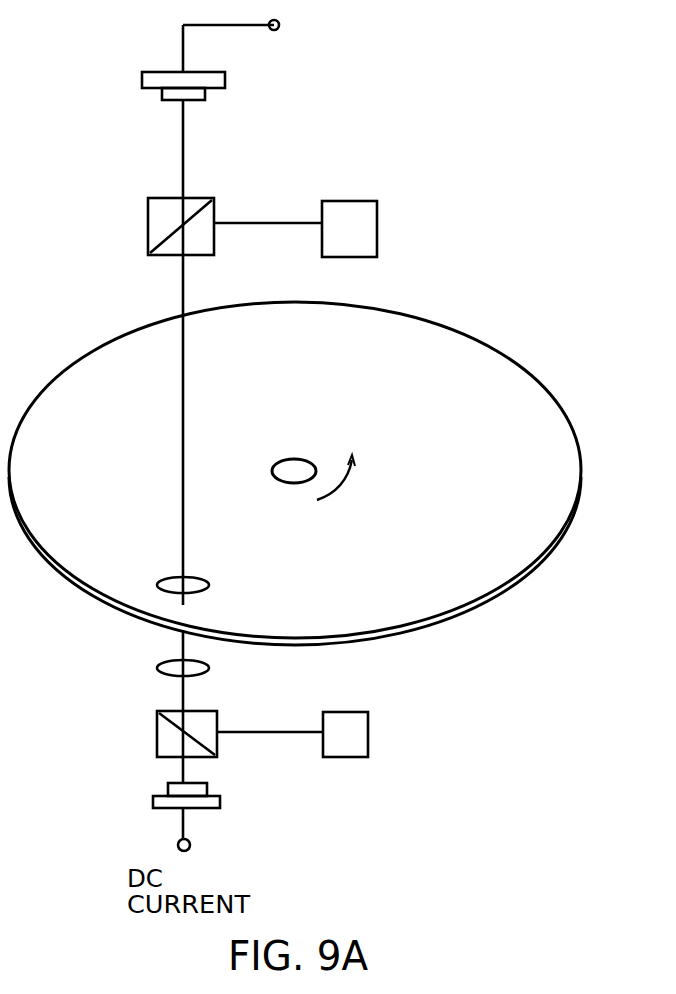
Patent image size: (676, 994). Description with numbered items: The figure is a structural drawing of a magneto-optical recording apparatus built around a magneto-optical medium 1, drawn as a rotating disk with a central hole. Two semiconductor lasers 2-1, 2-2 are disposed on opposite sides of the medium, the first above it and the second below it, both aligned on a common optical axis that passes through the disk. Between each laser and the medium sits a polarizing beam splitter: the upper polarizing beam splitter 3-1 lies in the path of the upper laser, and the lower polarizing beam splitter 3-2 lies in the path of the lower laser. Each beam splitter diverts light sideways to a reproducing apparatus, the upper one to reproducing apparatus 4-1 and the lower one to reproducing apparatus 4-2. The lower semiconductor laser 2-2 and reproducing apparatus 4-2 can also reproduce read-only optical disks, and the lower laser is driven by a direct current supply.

The magneto-optical medium 1 is at (562, 509).
The semiconductor laser 2-1 is at (225, 80).
The polarizing beam splitter 3-1 is at (212, 208).
The reproducing apparatus 4-1 is at (370, 222).
The polarizing beam splitter 3-2 is at (157, 727).
The reproducing apparatus 4-2 is at (360, 733).
The semiconductor laser 2-2 is at (220, 800).